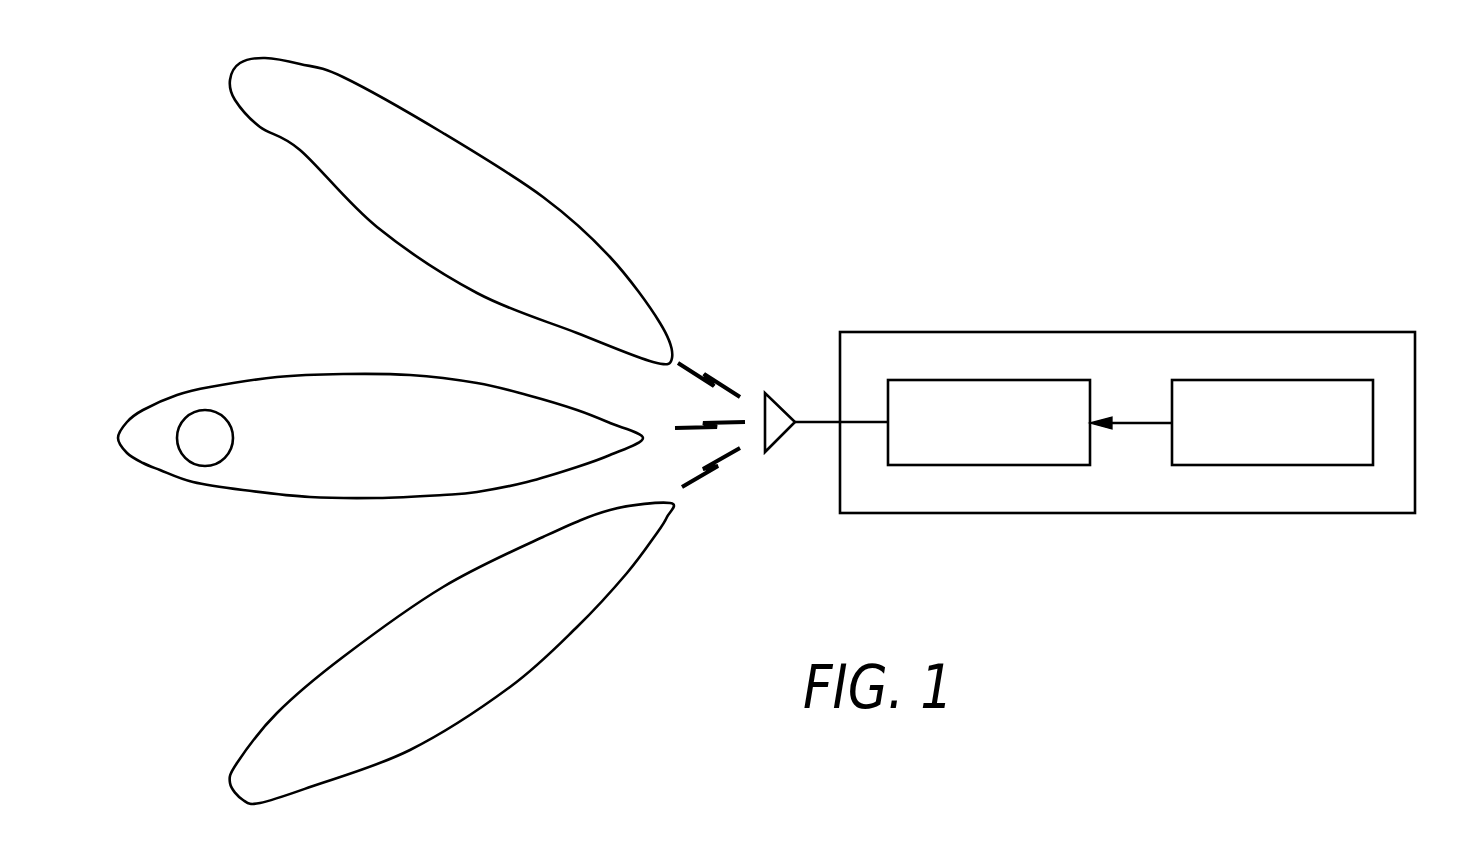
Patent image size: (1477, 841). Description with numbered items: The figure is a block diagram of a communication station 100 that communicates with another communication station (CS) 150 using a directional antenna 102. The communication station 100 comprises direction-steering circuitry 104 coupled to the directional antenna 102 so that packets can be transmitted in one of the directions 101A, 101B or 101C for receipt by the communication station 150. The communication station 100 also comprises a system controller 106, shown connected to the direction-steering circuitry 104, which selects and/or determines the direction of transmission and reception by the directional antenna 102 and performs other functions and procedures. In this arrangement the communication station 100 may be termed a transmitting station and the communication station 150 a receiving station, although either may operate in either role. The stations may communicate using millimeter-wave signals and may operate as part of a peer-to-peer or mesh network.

The communication station 100 is at (1395, 332).
The direction 101A is at (320, 497).
The direction 101B is at (460, 142).
The direction 101C is at (572, 630).
The directional antenna 102 is at (786, 413).
The direction-steering circuitry 104 is at (1070, 380).
The system controller 106 is at (1350, 380).
The communication station (CS) 150 is at (233, 437).